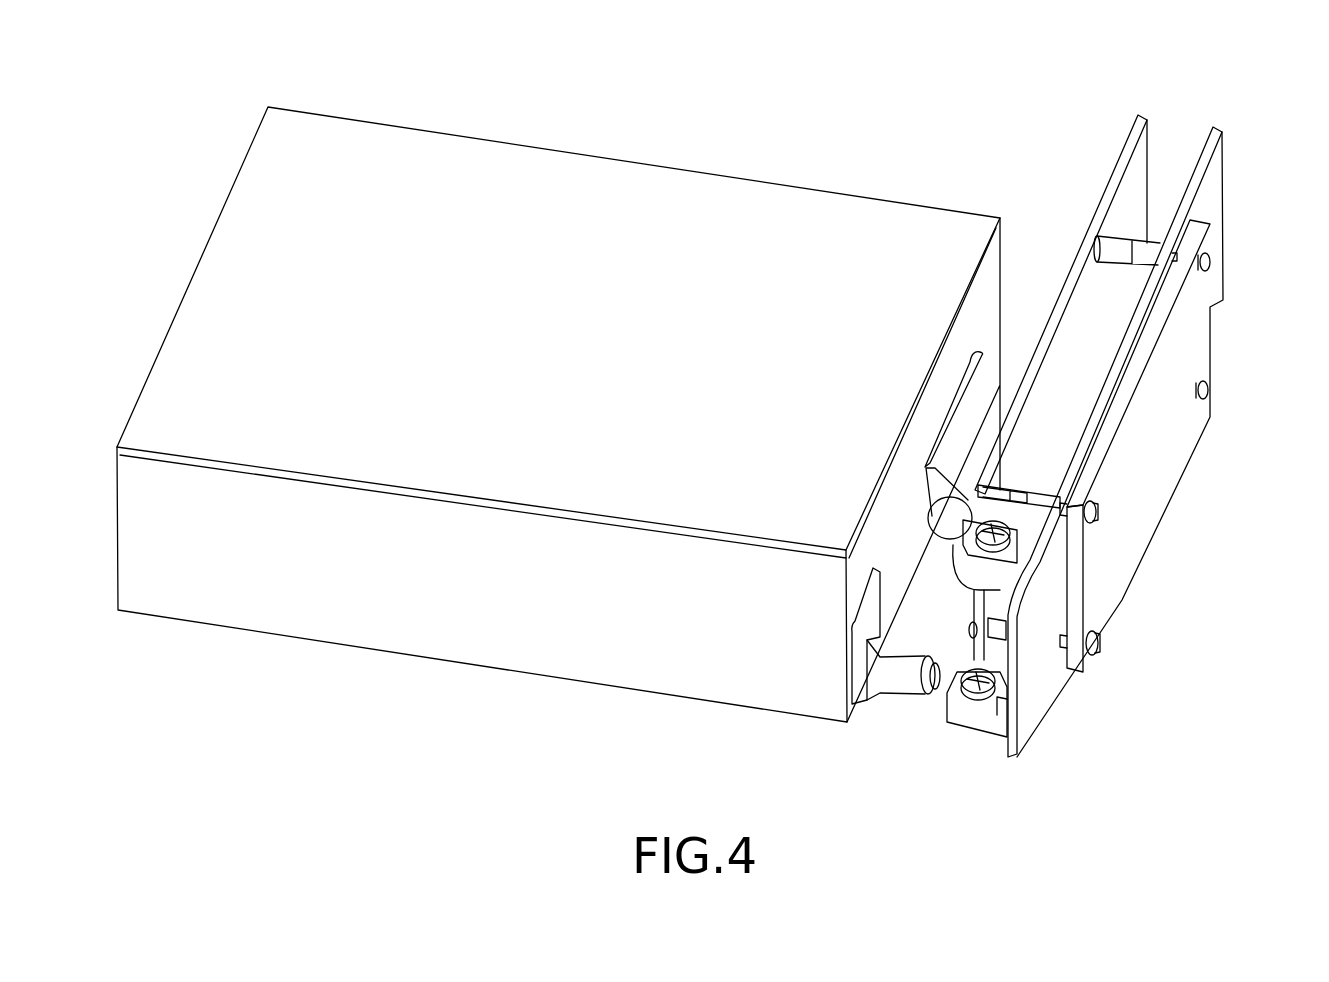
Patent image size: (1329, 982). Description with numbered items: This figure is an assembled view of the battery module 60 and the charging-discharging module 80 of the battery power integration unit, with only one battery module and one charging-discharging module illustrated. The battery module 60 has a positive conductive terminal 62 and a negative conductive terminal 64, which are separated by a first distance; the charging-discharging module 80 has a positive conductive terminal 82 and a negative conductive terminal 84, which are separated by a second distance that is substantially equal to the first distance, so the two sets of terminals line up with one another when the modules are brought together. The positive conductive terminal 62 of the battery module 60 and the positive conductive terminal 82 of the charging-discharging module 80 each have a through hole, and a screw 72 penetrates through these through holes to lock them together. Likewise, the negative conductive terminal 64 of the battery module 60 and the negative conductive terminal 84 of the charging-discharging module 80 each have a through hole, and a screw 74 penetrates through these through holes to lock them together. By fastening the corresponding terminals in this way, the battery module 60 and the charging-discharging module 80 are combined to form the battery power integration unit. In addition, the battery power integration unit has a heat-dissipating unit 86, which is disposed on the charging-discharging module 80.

The battery module 60 is at (628, 150).
The charging-discharging module 80 is at (1193, 107).
The heat-dissipating unit 86 is at (1147, 483).
The positive conductive terminal 82 is at (1017, 545).
The screw 72 is at (1010, 523).
The positive conductive terminal 62 is at (1006, 628).
The negative conductive terminal 84 is at (957, 693).
The screw 74 is at (985, 685).
The negative conductive terminal 64 is at (942, 697).